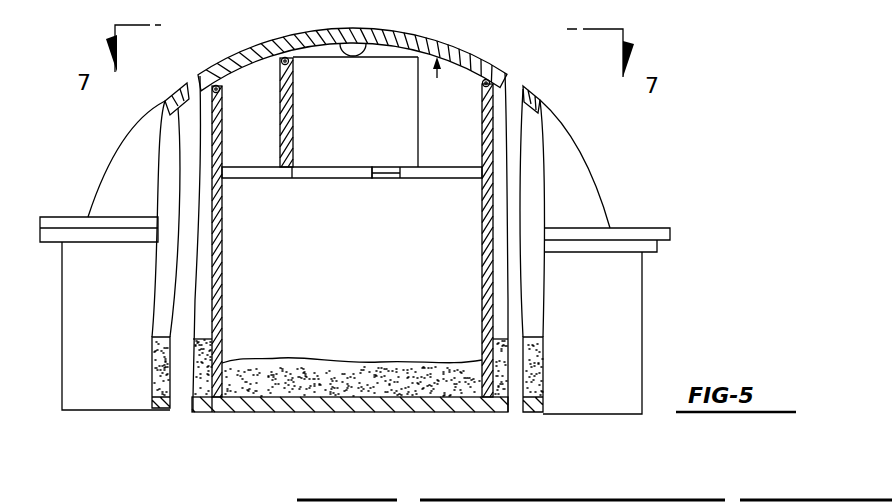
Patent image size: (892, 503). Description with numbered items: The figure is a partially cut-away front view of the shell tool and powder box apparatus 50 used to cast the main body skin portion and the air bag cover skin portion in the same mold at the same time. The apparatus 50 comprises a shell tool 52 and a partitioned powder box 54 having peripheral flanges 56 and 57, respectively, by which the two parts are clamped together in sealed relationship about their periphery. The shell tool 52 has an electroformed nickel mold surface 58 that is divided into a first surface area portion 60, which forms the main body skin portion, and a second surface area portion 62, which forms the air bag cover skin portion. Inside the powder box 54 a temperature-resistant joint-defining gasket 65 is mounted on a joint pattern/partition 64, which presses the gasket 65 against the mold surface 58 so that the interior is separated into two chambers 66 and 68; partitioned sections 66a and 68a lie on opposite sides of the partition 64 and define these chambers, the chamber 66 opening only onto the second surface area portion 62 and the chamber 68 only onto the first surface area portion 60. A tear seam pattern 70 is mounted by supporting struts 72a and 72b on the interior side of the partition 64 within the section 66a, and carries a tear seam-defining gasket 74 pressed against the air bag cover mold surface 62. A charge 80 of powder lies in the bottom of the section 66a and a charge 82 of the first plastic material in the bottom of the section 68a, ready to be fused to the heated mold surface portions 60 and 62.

The shell tool and powder box apparatus 50 is at (630, 208).
The shell tool 52 is at (447, 44).
The partitioned powder box 54 is at (632, 320).
The peripheral flange 56 is at (660, 227).
The peripheral flange 57 is at (657, 253).
The mold surface 58 is at (443, 83).
The first surface area portion 60 is at (186, 112).
The second surface area portion 62 is at (360, 53).
The joint pattern/partition 64 is at (236, 263).
The joint-defining gasket 65 is at (219, 91).
The chamber 66 is at (362, 257).
The partitioned section 66a is at (437, 300).
The chamber 68 is at (168, 163).
The partitioned section 68a is at (165, 292).
The tear seam pattern 70 is at (304, 103).
The supporting strut 72a is at (253, 178).
The supporting strut 72b is at (450, 178).
The tear seam-defining gasket 74 is at (310, 55).
The charge of powder 80 is at (342, 387).
The charge of first plastic material 82 is at (205, 410).